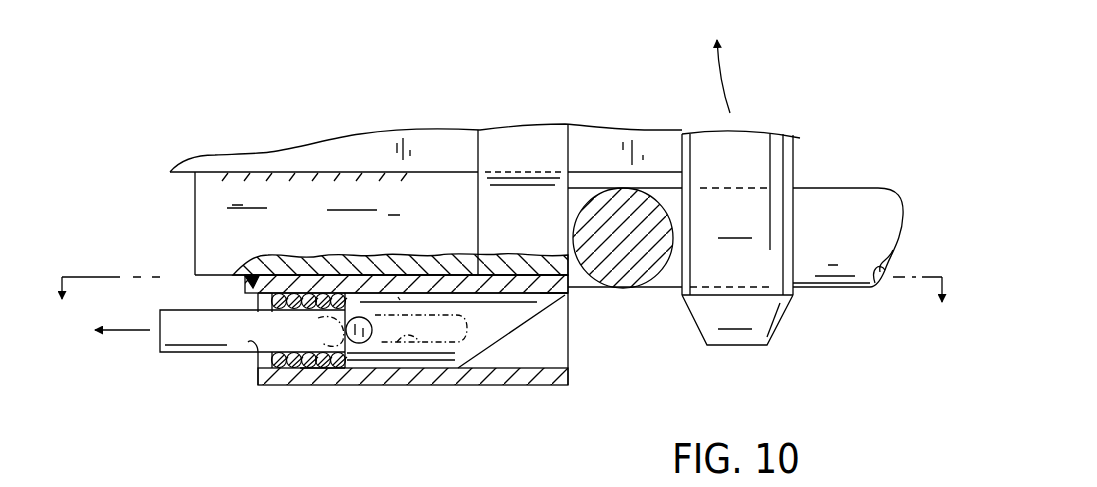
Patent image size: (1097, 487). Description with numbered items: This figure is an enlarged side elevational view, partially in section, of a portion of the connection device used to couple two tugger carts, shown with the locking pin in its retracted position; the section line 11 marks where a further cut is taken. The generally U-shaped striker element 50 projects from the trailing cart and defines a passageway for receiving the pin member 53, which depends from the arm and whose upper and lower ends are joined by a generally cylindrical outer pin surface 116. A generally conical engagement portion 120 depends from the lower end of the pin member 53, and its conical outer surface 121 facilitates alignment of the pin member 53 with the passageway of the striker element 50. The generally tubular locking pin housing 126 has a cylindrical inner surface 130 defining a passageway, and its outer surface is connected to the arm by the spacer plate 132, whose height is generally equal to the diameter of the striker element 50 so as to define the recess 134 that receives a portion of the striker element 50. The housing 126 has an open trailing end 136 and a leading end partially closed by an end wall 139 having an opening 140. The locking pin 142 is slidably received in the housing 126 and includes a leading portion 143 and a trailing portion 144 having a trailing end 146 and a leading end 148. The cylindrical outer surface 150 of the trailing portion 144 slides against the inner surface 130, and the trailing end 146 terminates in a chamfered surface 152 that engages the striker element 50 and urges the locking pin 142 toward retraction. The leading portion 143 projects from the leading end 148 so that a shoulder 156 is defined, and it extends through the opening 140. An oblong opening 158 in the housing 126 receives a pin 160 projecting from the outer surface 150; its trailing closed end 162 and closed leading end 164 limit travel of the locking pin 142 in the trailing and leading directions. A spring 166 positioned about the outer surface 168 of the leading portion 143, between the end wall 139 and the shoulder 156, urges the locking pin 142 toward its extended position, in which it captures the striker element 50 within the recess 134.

The section line 11 is at (505, 274).
The striker element 50 is at (839, 294).
The pin member 53 is at (799, 166).
The outer pin surface 116 is at (741, 213).
The engagement portion 120 is at (780, 333).
The conical outer surface 121 is at (737, 320).
The locking pin housing 126 is at (271, 389).
The inner surface 130 is at (557, 368).
The spacer plate 132 is at (205, 208).
The recess 134 is at (660, 178).
The open trailing end 136 is at (574, 368).
The end wall 139 is at (258, 297).
The opening 140 is at (248, 342).
The locking pin 142 is at (367, 387).
The leading portion 143 is at (210, 357).
The trailing portion 144 is at (452, 292).
The trailing end 146 is at (560, 292).
The leading end 148 is at (335, 291).
The outer surface 150 is at (398, 297).
The chamfered surface 152 is at (560, 295).
The shoulder 156 is at (318, 370).
The oblong opening 158 is at (423, 348).
The pin 160 is at (357, 343).
The trailing closed end 162 is at (448, 367).
The closed leading end 164 is at (325, 343).
The spring 166 is at (300, 367).
The outer surface 168 is at (172, 340).